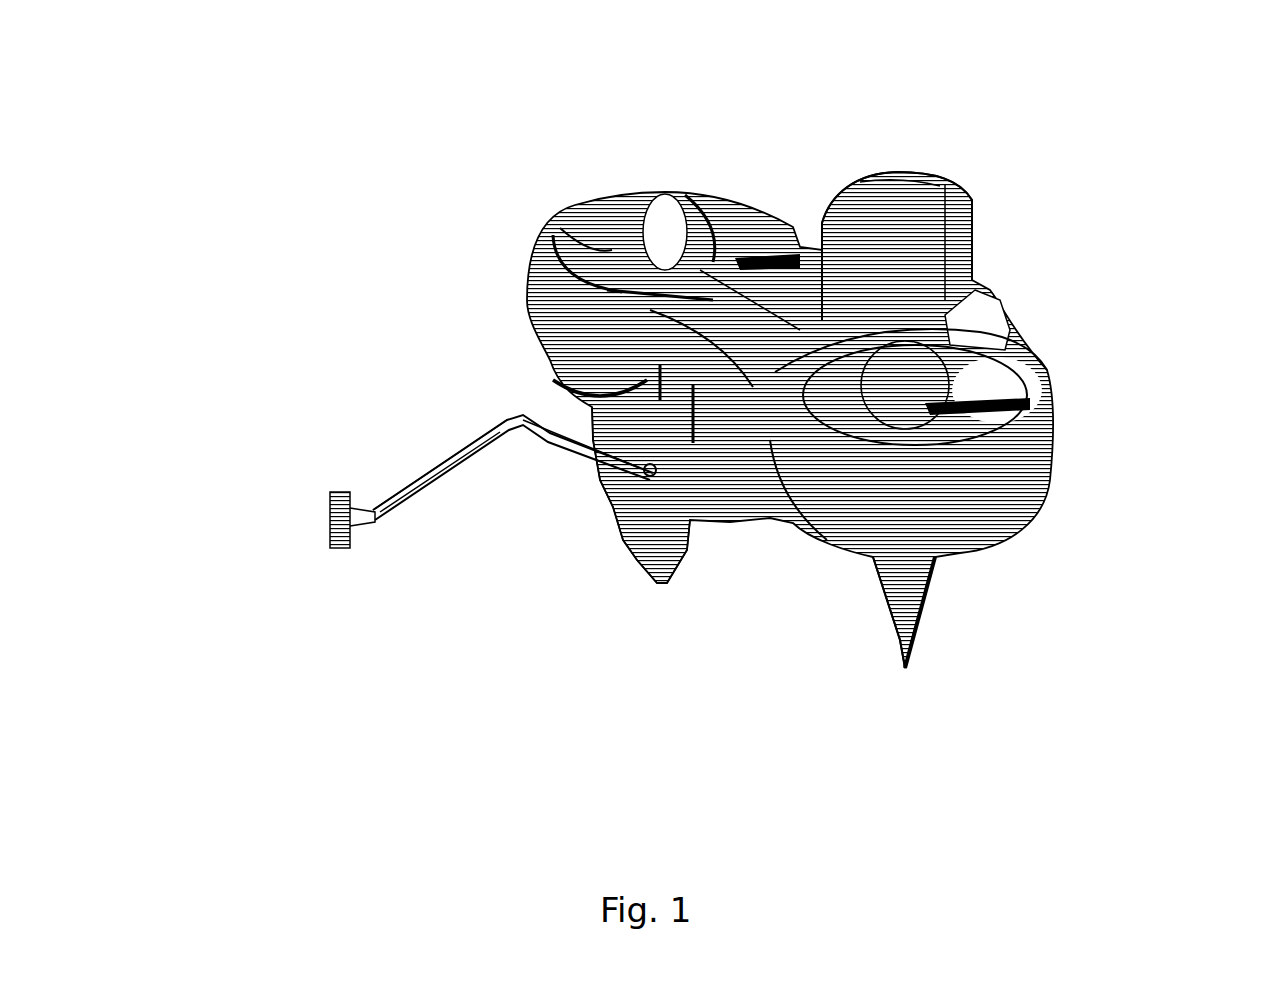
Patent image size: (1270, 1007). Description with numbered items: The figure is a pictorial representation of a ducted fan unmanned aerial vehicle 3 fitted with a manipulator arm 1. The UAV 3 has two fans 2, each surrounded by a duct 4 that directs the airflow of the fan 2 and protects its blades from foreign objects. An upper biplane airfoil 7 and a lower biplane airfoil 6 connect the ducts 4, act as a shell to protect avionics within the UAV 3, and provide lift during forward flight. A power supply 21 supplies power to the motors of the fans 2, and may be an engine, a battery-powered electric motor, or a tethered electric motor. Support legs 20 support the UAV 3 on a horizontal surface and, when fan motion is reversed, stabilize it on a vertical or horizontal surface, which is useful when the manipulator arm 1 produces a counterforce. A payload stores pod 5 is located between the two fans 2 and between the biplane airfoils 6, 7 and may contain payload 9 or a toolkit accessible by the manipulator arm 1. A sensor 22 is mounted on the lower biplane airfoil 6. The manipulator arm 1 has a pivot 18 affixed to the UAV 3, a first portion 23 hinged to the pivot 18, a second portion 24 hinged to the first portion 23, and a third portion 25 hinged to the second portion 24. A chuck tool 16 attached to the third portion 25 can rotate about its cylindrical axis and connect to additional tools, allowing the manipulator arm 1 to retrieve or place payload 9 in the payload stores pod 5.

The ducted fan unmanned aerial vehicle 3 is at (330, 147).
The fan 2 is at (586, 249).
The power supply 21 is at (965, 195).
The upper biplane airfoil 7 is at (990, 320).
The payload stores pod 5 is at (730, 322).
The duct 4 is at (1043, 462).
The support legs 20 is at (920, 665).
The lower biplane airfoil 6 is at (646, 558).
The pivot 18 is at (655, 472).
The sensor 22 is at (618, 393).
The manipulator arm 1 is at (474, 438).
The payload 9 is at (337, 547).
The chuck tool 16 is at (362, 517).
The second portion 24 is at (425, 487).
The first portion 23 is at (577, 445).
The third portion 25 is at (373, 510).